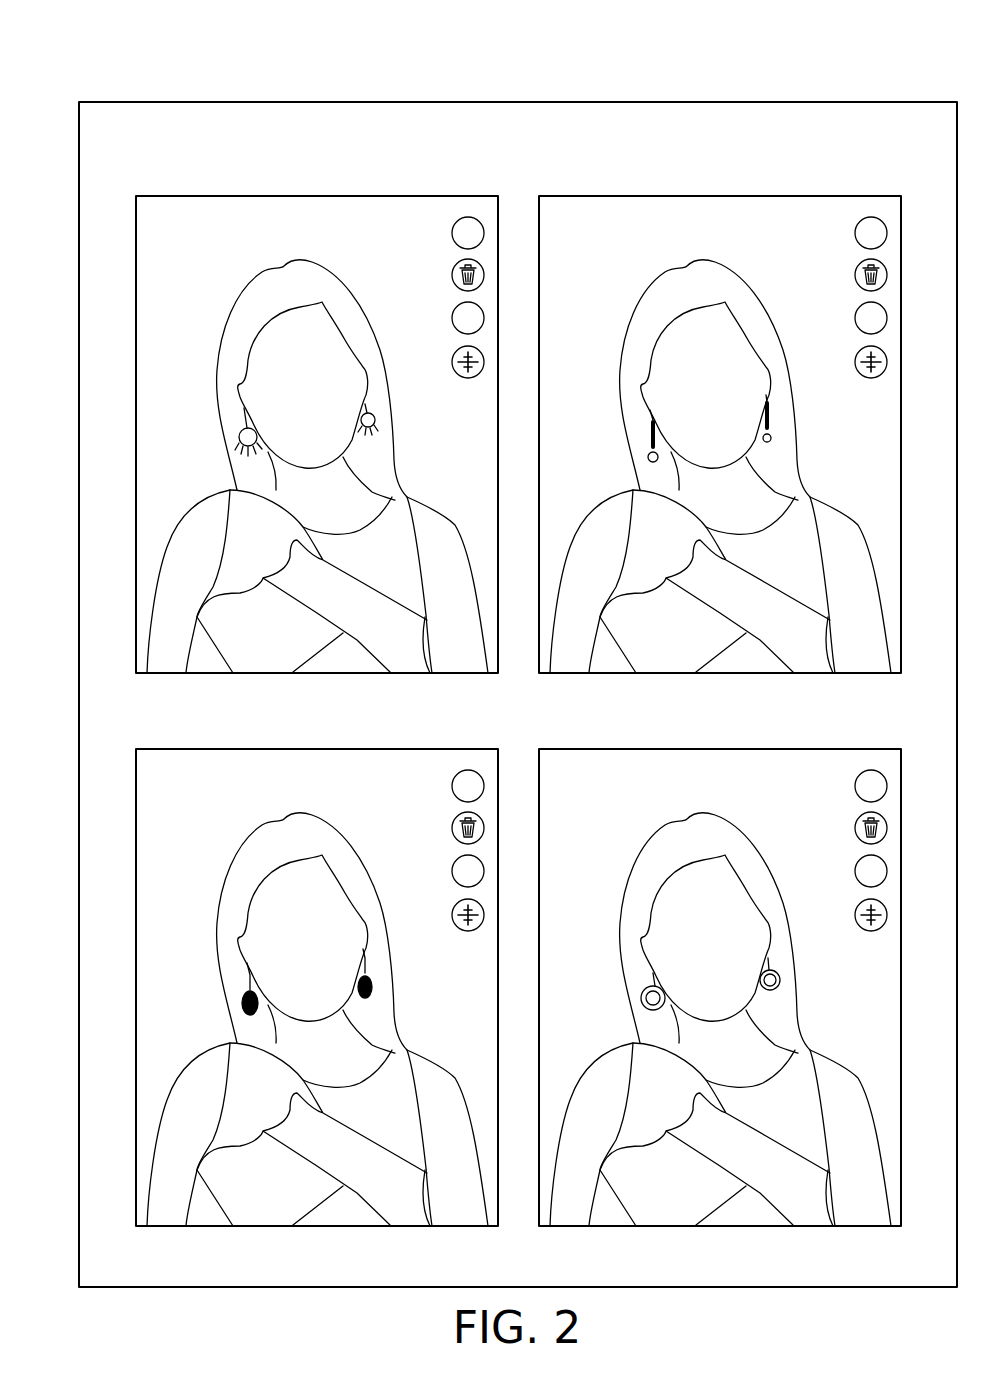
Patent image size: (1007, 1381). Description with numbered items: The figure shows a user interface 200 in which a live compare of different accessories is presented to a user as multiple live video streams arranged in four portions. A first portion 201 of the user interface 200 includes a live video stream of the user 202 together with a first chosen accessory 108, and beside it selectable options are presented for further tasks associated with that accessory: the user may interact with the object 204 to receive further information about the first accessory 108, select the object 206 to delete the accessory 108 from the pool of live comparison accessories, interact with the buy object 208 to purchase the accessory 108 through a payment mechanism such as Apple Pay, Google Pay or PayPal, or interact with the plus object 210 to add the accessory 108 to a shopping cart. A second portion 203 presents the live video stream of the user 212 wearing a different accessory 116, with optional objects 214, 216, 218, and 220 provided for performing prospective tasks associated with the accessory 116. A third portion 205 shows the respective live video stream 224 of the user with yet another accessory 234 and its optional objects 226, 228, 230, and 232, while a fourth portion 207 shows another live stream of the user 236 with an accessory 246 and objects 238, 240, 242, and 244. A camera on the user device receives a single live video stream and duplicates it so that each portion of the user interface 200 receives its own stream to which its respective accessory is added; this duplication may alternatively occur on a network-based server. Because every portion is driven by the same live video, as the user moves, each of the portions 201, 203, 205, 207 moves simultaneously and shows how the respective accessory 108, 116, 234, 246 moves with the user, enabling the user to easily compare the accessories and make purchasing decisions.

The user interface 200 is at (96, 72).
The first portion 201 is at (193, 196).
The live video stream of the user 202 is at (238, 305).
The first accessory 108 is at (238, 433).
The object 204 is at (452, 233).
The object 206 is at (452, 275).
The buy object 208 is at (452, 318).
The plus object 210 is at (452, 362).
The second portion 203 is at (720, 410).
The live video stream of the user 212 is at (720, 466).
The accessories 116 is at (666, 428).
The optional object 214 is at (838, 230).
The optional object 216 is at (838, 272).
The optional object 218 is at (838, 315).
The optional object 220 is at (838, 358).
The third portion 205 is at (317, 963).
The live video stream 224 is at (317, 1019).
The accessory 234 is at (265, 982).
The optional object 226 is at (435, 783).
The optional object 228 is at (435, 825).
The optional object 230 is at (435, 868).
The optional object 232 is at (435, 911).
The fourth portion 207 is at (720, 963).
The live stream of the user 236 is at (720, 1019).
The accessory 246 is at (670, 981).
The object 238 is at (838, 783).
The object 240 is at (838, 825).
The object 242 is at (838, 868).
The object 244 is at (838, 911).